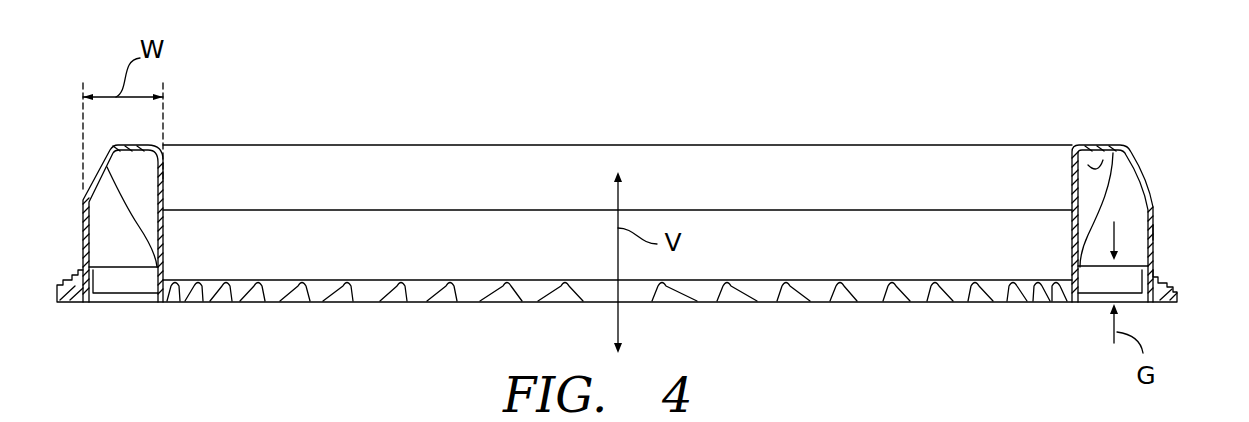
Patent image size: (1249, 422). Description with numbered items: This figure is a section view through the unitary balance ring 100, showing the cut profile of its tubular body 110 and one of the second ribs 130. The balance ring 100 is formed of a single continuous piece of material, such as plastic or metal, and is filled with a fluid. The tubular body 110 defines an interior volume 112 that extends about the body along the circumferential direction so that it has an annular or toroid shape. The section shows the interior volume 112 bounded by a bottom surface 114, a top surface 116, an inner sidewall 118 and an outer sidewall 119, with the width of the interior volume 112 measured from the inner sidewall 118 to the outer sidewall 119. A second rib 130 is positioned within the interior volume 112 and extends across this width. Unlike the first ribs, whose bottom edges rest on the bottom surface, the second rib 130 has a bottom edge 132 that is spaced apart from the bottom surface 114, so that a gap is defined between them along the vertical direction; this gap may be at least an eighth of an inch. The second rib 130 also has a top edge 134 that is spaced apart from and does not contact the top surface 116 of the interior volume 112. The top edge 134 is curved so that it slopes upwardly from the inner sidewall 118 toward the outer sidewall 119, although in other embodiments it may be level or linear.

The unitary balance ring 100 is at (1155, 115).
The tubular body 110 is at (700, 172).
The interior volume 112 is at (140, 203).
The bottom surface 114 is at (106, 282).
The top surface 116 is at (1094, 165).
The inner sidewall 118 is at (1075, 230).
The outer sidewall 119 is at (1156, 232).
The second ribs 130 is at (103, 217).
The bottom edge 132 is at (124, 290).
The top edge 134 is at (122, 192).